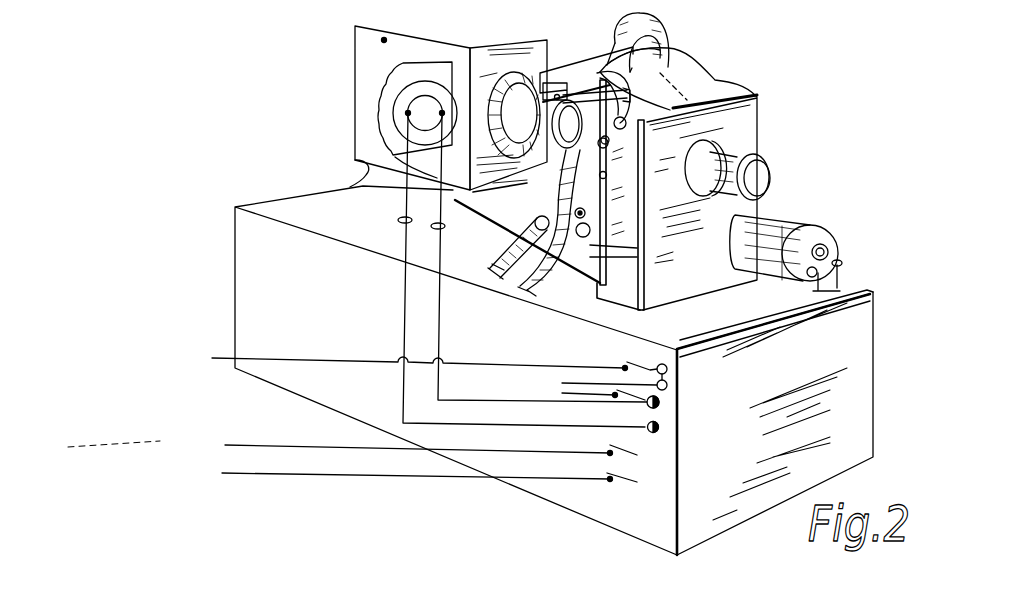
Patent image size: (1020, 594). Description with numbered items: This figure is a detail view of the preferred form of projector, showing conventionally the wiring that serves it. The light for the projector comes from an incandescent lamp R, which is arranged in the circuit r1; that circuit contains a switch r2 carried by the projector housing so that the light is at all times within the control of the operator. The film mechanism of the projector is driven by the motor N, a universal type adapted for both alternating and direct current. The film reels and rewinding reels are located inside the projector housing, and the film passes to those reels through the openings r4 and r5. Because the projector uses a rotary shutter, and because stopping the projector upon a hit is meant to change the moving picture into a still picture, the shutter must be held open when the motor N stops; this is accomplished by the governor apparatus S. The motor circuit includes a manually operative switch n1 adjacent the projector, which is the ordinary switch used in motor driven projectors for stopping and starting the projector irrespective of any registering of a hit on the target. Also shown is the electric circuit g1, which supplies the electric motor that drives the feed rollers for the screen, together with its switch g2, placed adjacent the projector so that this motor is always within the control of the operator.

The incandescent lamp R is at (451, 108).
The governor apparatus S is at (578, 87).
The motor N is at (783, 228).
The circuit r1 is at (513, 274).
The switch r2 is at (662, 400).
The opening r4 is at (549, 229).
The opening r5 is at (515, 260).
The manually operative switch n1 is at (627, 367).
The electric circuit g1 is at (640, 448).
The switch g2 is at (630, 483).